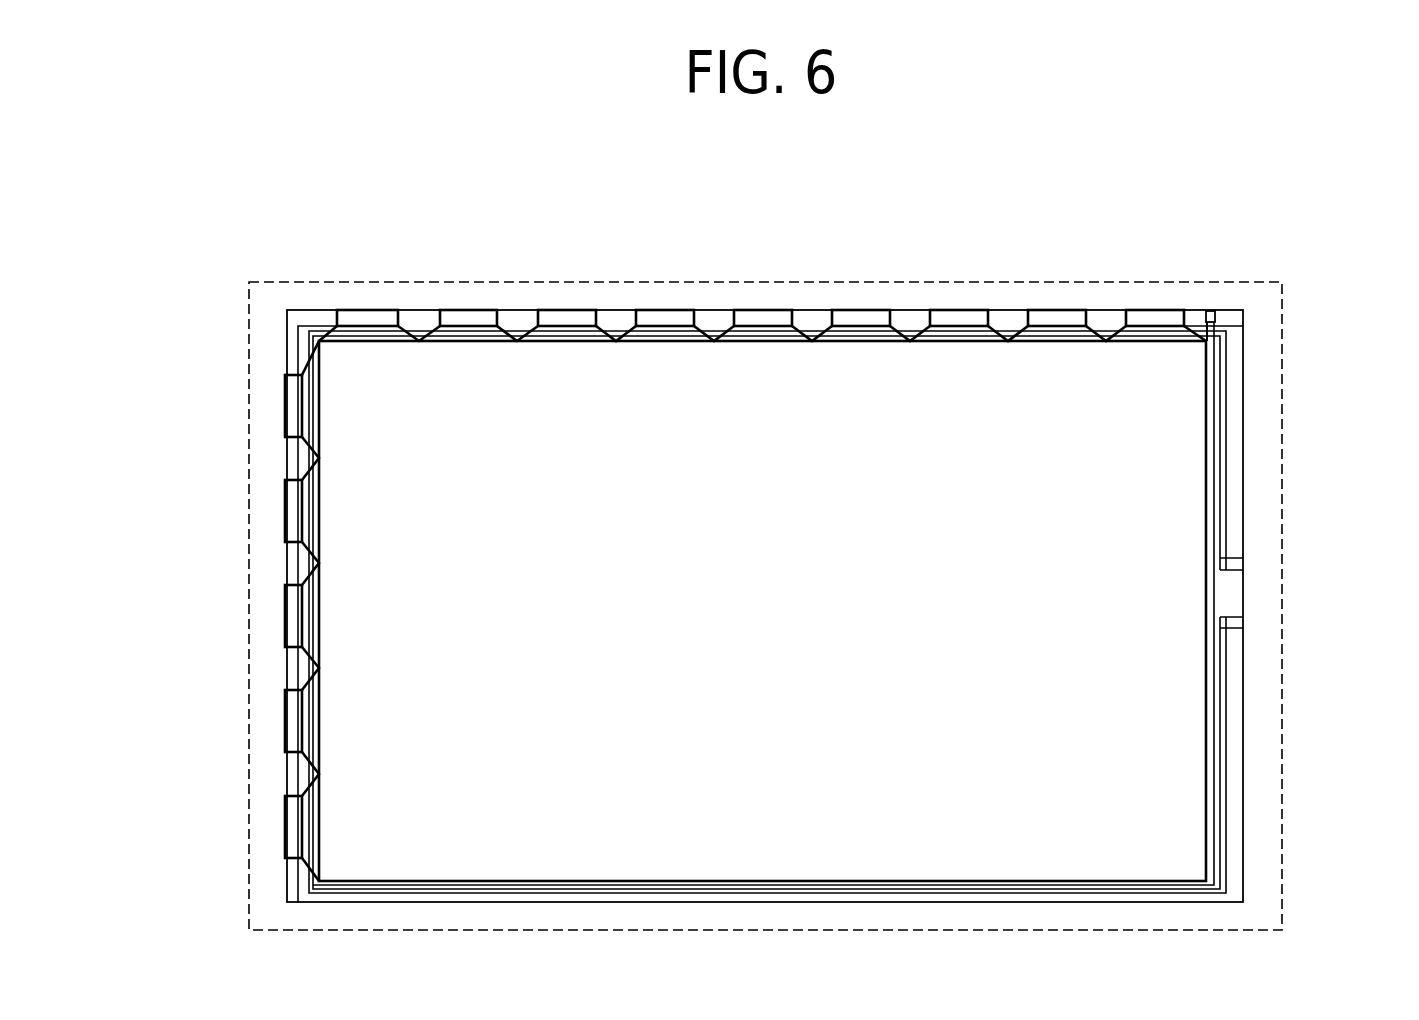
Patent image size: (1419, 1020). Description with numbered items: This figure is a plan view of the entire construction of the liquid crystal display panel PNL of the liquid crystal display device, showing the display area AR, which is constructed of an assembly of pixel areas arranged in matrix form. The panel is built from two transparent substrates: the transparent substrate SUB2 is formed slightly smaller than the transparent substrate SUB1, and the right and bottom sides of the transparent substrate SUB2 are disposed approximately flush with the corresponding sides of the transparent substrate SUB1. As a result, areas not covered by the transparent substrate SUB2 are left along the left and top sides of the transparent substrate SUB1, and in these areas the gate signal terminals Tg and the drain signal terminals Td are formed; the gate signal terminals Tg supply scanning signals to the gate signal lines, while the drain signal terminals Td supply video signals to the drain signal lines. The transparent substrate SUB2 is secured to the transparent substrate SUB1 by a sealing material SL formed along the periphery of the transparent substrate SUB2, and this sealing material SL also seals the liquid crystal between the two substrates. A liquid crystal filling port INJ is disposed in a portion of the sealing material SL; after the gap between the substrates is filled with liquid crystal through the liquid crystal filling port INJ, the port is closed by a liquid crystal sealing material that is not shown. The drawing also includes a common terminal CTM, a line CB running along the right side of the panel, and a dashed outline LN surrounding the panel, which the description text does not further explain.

The transparent substrate SUB1 is at (372, 308).
The transparent substrate SUB2 is at (298, 361).
The drain signal terminals Td is at (490, 310).
The gate signal terminals Tg is at (285, 377).
The liquid crystal display panel PNL is at (650, 410).
The common terminal CTM is at (1207, 311).
The common bus line CB is at (1212, 412).
The sealing material SL is at (1222, 497).
The liquid crystal filling port INJ is at (1230, 598).
The lens (outline of the liquid crystal device) LN is at (248, 722).
The display area AR is at (762, 611).